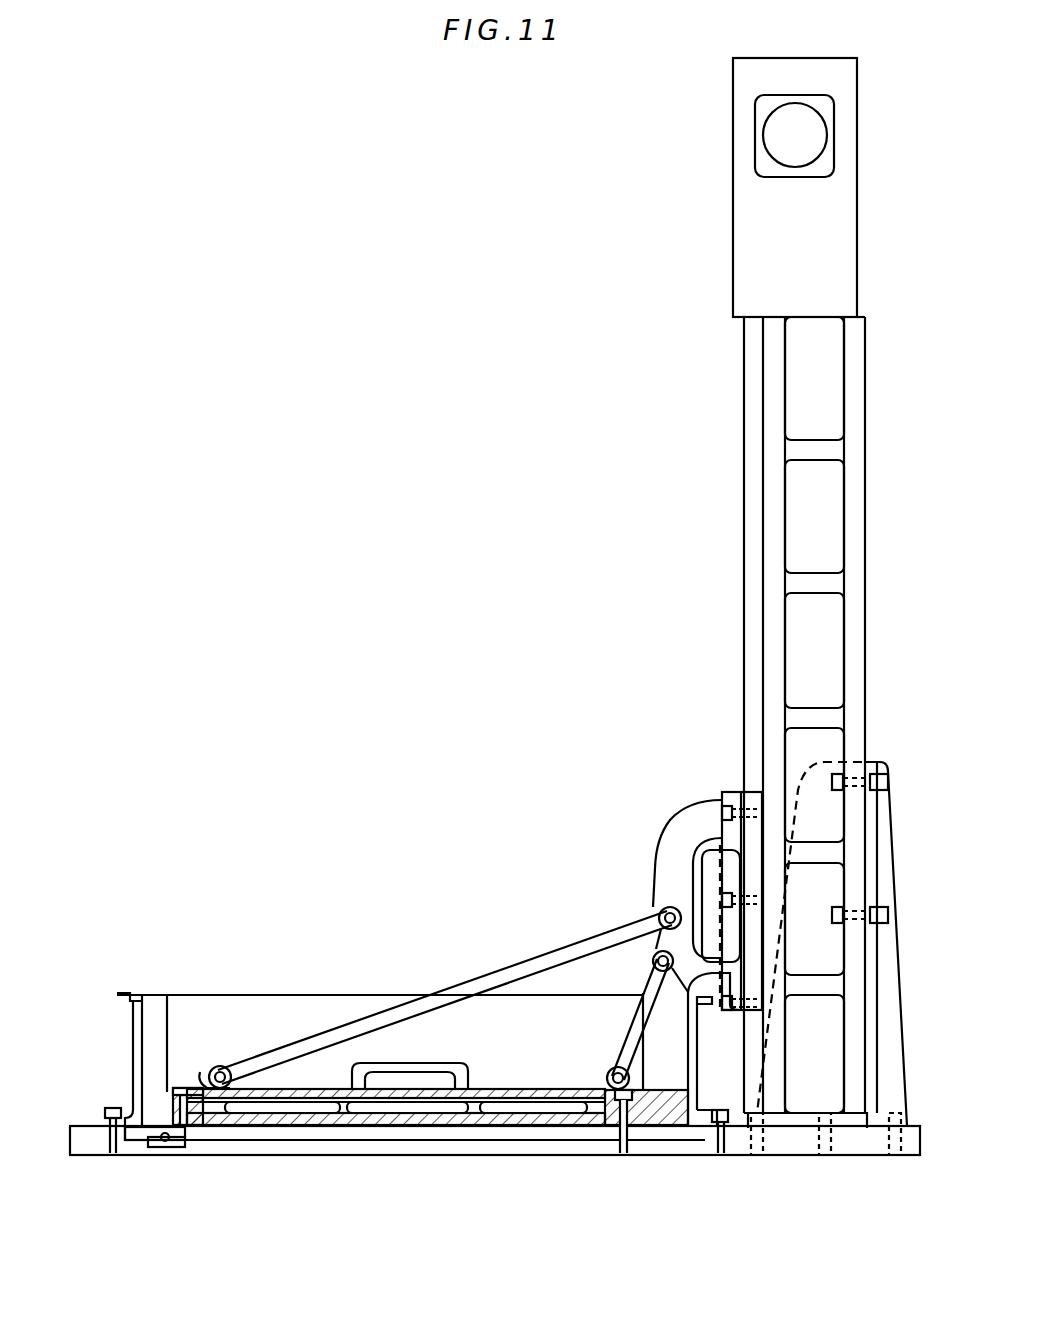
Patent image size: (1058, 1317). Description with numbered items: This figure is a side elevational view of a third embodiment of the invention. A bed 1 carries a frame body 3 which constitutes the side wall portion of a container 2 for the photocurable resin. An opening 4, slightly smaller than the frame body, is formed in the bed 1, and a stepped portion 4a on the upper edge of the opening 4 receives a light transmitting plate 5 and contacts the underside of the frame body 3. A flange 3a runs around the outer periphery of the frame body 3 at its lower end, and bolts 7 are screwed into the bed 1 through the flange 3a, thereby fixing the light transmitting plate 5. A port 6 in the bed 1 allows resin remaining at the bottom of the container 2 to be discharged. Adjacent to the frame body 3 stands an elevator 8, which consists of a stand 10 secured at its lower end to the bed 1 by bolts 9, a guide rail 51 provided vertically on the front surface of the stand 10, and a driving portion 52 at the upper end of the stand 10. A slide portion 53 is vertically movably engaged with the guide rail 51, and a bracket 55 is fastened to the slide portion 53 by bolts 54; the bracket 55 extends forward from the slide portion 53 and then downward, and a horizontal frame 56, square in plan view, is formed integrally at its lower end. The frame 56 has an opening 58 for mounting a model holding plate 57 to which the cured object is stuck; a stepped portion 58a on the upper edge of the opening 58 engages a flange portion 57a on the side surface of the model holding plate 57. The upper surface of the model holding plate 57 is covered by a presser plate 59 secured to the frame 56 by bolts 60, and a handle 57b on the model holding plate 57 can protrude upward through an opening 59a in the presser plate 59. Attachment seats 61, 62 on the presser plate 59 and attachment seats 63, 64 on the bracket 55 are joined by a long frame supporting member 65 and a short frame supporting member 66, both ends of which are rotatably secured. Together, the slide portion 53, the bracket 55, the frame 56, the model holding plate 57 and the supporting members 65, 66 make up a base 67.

The bed 1 is at (80, 1126).
The container 2 is at (116, 988).
The frame body 3 is at (140, 1030).
The flange 3a is at (102, 1116).
The opening 4 is at (186, 1153).
The stepped portion 4a is at (162, 1153).
The light transmitting plate 5 is at (336, 1153).
The port 6 is at (130, 1155).
The bolts 7 is at (113, 1106).
The elevator 8 is at (866, 385).
The bolts 9 is at (880, 1157).
The stand 10 is at (865, 450).
The guide rail 51 is at (744, 350).
The driving portion 52 is at (733, 251).
The slide portion 53 is at (756, 790).
The bolts 54 is at (722, 798).
The bracket 55 is at (662, 845).
The frame 56 is at (167, 1088).
The model holding plate 57 is at (400, 1140).
The flange portion 57a is at (250, 1127).
The handle 57b is at (416, 1062).
The opening 58 is at (232, 1128).
The stepped portion 58a is at (190, 1127).
The presser plate 59 is at (543, 1088).
The opening 59a is at (478, 1100).
The bolts 60 is at (178, 1088).
The attachment seat 61 is at (188, 1090).
The attachment seat 62 is at (720, 1155).
The attachment seat 63 is at (659, 911).
The attachment seat 64 is at (652, 962).
The long frame supporting member 65 is at (462, 983).
The short frame supporting member 66 is at (632, 1030).
The base 67 is at (303, 1012).